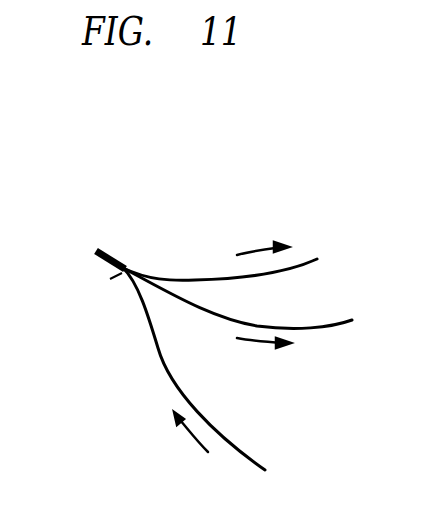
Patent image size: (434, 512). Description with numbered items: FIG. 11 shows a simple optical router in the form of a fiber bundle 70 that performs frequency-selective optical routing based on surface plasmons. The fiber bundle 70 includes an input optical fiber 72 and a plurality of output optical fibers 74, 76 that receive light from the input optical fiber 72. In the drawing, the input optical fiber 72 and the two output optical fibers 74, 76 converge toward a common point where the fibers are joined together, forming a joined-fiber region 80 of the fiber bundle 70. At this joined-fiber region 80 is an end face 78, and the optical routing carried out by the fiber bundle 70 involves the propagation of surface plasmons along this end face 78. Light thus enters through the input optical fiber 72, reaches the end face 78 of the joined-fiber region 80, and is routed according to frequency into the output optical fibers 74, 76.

The fiber bundle 70 is at (102, 207).
The input optical fiber 72 is at (162, 363).
The output optical fiber 74 is at (218, 320).
The output optical fiber 76 is at (153, 273).
The end face 78 is at (97, 253).
The joined-fiber region 80 is at (112, 279).